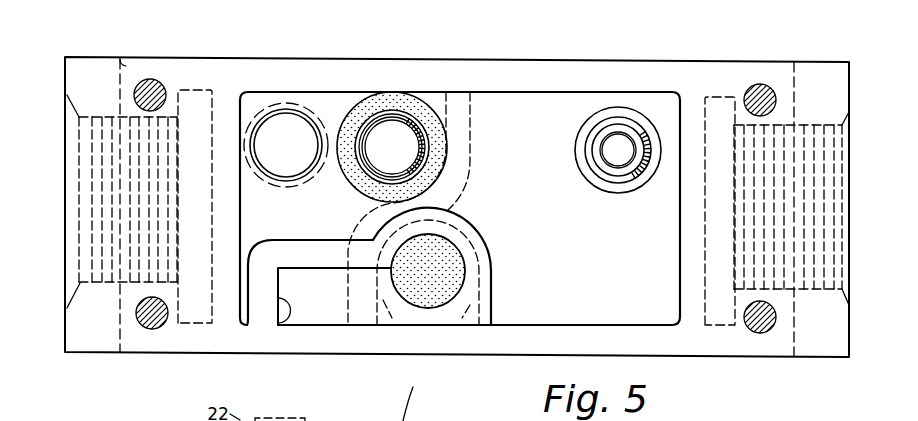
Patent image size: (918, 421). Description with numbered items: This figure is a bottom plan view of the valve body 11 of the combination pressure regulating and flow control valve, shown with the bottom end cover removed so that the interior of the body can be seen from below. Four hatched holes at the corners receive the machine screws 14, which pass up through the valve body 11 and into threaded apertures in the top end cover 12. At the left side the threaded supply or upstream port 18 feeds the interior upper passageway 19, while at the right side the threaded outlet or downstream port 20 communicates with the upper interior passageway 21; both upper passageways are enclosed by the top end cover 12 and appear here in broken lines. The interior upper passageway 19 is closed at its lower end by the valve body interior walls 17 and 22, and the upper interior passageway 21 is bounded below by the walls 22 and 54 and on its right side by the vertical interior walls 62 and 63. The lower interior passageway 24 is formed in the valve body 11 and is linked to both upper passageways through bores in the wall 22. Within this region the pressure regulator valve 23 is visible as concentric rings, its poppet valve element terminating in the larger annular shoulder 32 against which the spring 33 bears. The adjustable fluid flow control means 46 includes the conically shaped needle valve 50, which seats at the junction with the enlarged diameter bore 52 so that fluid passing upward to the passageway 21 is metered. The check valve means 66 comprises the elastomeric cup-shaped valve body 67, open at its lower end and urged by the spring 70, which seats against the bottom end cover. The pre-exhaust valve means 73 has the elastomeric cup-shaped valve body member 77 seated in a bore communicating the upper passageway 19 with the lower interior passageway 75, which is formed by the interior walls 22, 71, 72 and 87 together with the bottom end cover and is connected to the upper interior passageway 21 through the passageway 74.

The valve body 11 is at (205, 333).
The top end cover 12 is at (120, 318).
The machine screws 14 is at (143, 80).
The valve body interior wall 17 is at (693, 277).
The supply or upstream port 18 is at (820, 290).
The interior upper passageway 19 is at (688, 97).
The outlet or downstream port 20 is at (90, 281).
The upper interior passageway 21 is at (222, 90).
The valve body interior wall 22 is at (560, 108).
The pressure regulator valve 23 is at (576, 167).
The lower interior passageway 24 is at (508, 97).
The annular shoulder 32 is at (597, 178).
The spring 33 is at (637, 177).
The adjustable fluid flow control means 46 is at (258, 182).
The needle valve 50 is at (283, 122).
The enlarged diameter bore 52 is at (300, 120).
The valve body interior wall 54 is at (237, 225).
The vertical valve body interior wall 62 is at (355, 288).
The vertical valve body interior wall 63 is at (465, 137).
The check valve means 66 is at (352, 189).
The cup-shaped valve body 67 is at (395, 93).
The spring 70 is at (392, 147).
The interior valve body wall 71 is at (483, 306).
The interior valve body wall 72 is at (303, 255).
The pre-exhaust valve means 73 is at (463, 270).
The passageway 74 is at (326, 312).
The lower interior passageway 75 is at (285, 324).
The cup-shaped valve body member 77 is at (447, 257).
The interior valve body wall 87 is at (265, 287).